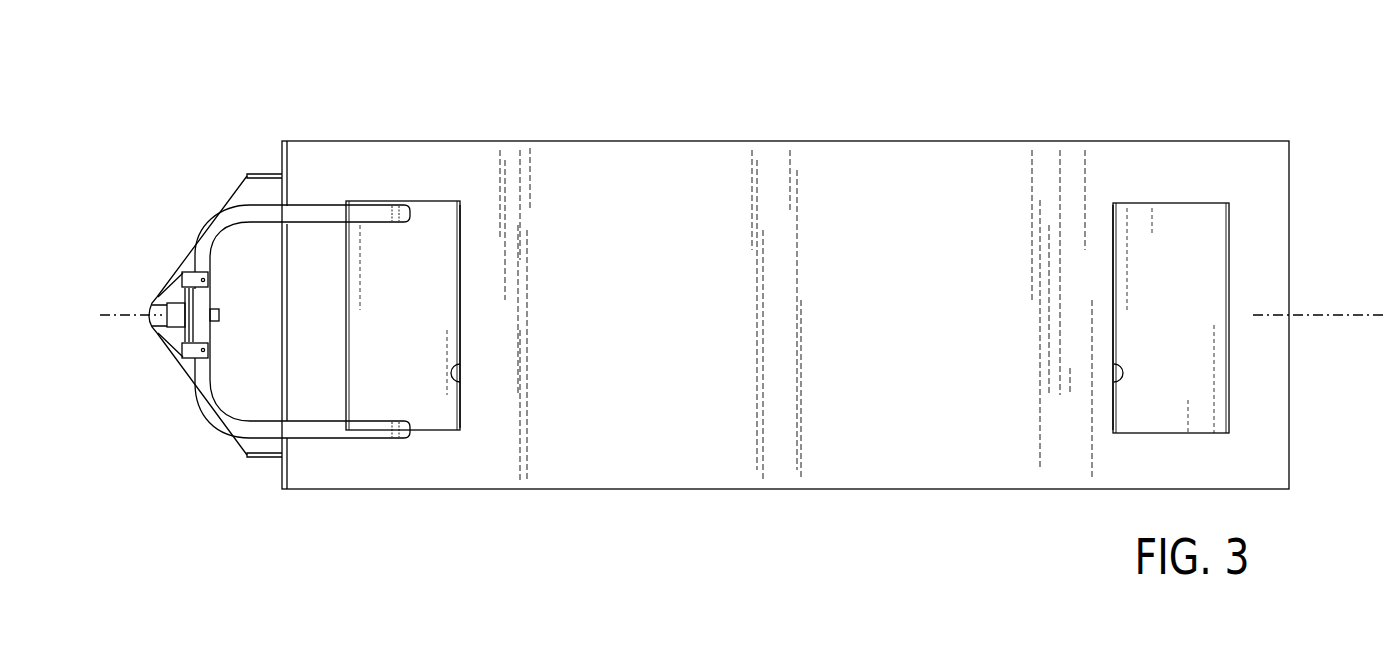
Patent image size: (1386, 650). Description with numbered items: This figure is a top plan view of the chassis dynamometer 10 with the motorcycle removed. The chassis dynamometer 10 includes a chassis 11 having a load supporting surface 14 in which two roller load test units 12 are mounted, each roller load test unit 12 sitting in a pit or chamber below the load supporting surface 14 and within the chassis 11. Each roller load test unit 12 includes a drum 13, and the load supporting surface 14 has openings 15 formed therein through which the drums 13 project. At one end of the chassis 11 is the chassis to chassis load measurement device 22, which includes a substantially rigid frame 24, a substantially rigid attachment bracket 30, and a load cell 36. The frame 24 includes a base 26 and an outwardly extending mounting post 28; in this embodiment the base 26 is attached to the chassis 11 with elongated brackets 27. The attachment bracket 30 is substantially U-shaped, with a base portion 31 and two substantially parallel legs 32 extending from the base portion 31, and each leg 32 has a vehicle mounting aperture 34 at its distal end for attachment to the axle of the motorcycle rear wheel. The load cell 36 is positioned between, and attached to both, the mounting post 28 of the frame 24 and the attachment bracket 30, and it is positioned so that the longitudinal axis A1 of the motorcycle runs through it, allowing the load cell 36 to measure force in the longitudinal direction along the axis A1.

The chassis dynamometer 10 is at (633, 125).
The chassis 11 is at (663, 171).
The roller load test unit 12 is at (412, 188).
The drum 13 is at (448, 283).
The load supporting surface 14 is at (911, 274).
The opening 15 is at (460, 382).
The chassis to chassis load measurement device 22 is at (180, 118).
The frame 24 is at (214, 214).
The base 26 is at (243, 450).
The elongated bracket 27 is at (287, 153).
The mounting post 28 is at (158, 332).
The attachment bracket 30 is at (307, 443).
The base portion 31 is at (202, 387).
The leg 32 is at (323, 215).
The vehicle mounting aperture 34 is at (402, 213).
The load cell 36 is at (157, 310).
The longitudinal axis A1 is at (1355, 315).